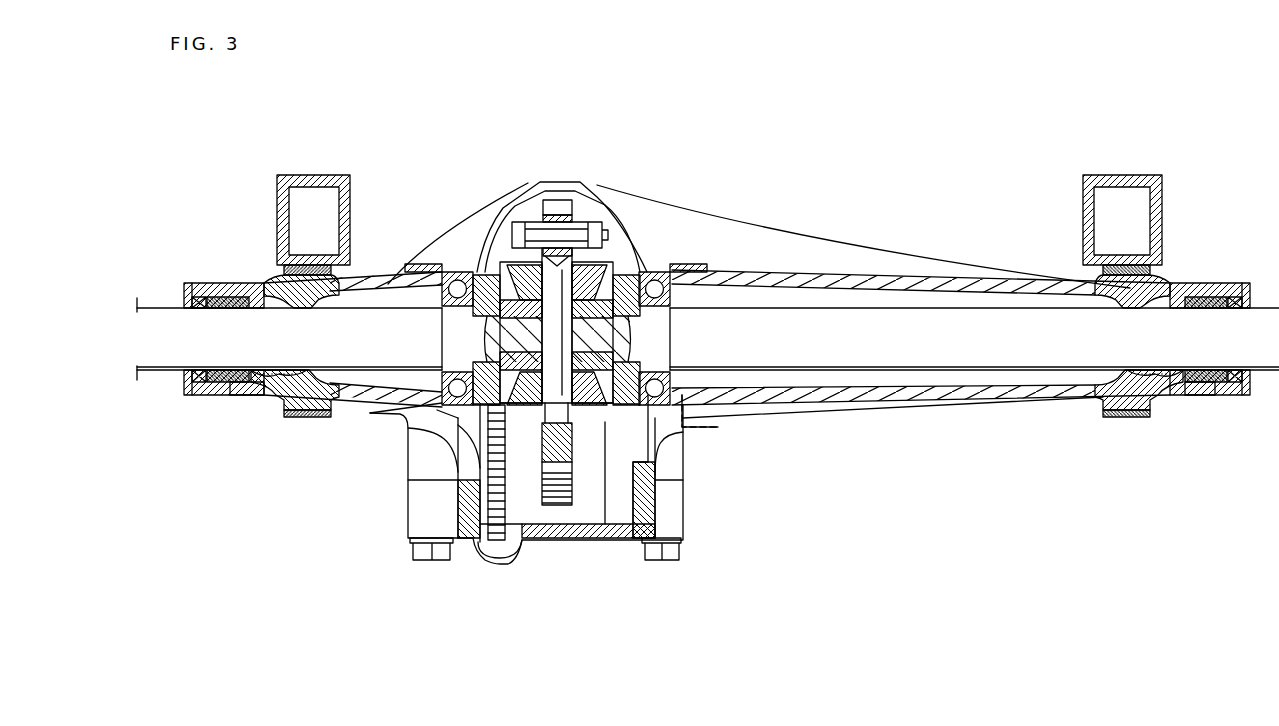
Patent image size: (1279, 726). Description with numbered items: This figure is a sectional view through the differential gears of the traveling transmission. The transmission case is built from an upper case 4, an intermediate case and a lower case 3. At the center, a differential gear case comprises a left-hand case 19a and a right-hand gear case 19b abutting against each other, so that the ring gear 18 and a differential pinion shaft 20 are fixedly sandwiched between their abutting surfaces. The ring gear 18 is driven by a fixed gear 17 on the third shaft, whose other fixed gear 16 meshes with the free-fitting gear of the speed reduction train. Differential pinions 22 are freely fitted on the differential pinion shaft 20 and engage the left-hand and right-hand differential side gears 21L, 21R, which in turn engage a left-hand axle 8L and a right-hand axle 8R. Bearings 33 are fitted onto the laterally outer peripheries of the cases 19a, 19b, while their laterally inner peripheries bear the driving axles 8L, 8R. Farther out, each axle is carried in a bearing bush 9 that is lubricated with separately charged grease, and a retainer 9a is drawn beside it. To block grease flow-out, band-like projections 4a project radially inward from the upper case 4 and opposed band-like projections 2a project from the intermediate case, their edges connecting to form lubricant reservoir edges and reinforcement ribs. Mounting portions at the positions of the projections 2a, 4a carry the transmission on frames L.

The frame L is at (351, 182).
The band-like projection 2a is at (297, 375).
The lower case 3 is at (687, 518).
The upper case 4 is at (367, 277).
The band-like projection 4a is at (310, 308).
The right-hand axle 8R is at (388, 354).
The left-hand axle 8L is at (901, 351).
The bearing bush 9 is at (230, 308).
The seal retainer 9a is at (230, 393).
The fixed gear 16 is at (497, 538).
The fixed gear 17 is at (557, 497).
The ring gear 18 is at (560, 205).
The left-hand gear case 19a is at (503, 258).
The right-hand gear case 19b is at (622, 270).
The differential pinion shaft 20 is at (564, 336).
The right-hand differential side gear 21R is at (497, 370).
The left-hand differential side gear 21L is at (618, 362).
The differential pinion 22 is at (598, 417).
The bearing 33 is at (435, 262).